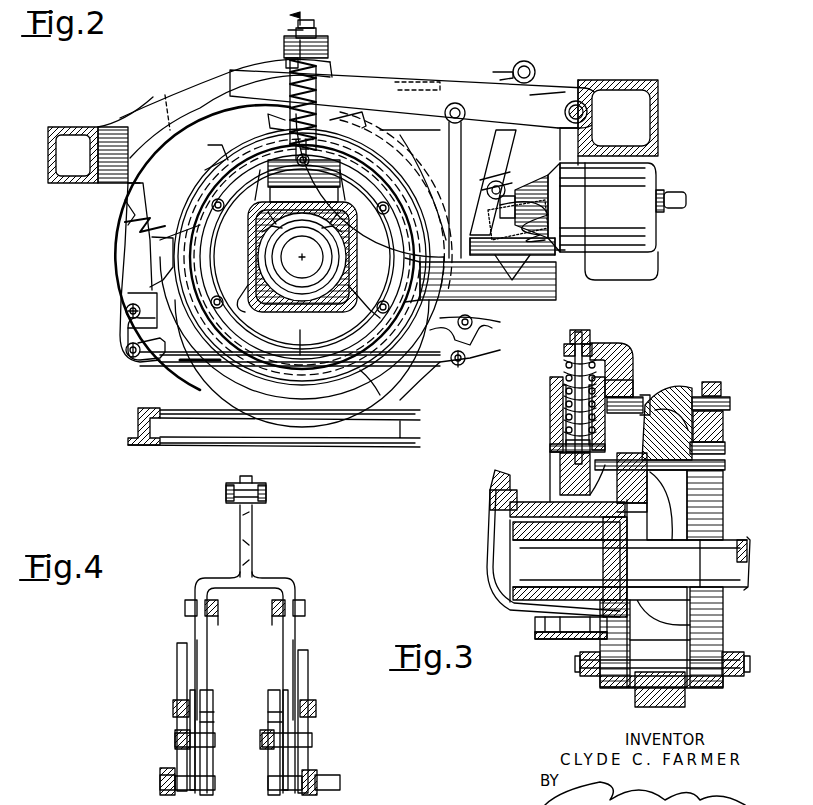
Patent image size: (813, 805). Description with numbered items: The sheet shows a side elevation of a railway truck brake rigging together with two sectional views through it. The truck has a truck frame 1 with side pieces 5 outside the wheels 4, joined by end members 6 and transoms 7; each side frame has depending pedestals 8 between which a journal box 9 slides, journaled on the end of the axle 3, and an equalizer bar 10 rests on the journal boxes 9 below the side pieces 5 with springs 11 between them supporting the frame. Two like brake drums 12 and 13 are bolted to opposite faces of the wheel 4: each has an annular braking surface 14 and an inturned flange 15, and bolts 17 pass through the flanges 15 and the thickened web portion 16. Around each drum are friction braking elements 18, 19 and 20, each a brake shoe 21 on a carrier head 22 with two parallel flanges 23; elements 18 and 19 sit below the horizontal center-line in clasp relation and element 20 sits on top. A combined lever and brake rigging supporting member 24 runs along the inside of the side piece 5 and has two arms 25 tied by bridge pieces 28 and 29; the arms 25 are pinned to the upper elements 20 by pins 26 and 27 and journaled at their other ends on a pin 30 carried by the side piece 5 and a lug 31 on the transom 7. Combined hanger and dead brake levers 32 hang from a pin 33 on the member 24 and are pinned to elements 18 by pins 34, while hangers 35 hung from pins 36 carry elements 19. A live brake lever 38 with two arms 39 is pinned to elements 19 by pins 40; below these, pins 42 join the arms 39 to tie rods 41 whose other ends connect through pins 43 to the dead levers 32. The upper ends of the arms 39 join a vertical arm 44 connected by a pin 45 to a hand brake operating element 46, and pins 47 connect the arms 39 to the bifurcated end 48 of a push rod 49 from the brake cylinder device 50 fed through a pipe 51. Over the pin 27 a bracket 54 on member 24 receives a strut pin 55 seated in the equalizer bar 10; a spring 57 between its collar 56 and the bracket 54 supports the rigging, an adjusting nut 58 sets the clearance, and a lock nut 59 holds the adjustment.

In FIG. 2, the truck frame 1 is at (640, 80).
In FIG. 2, the axle 3 is at (262, 246).
In FIG. 3, the axle 3 is at (748, 540).
In FIG. 2, the wheels 4 is at (185, 378).
In FIG. 3, the wheels 4 is at (672, 395).
In FIG. 2, the side pieces 5 is at (198, 85).
In FIG. 3, the side pieces 5 is at (550, 400).
In FIG. 2, the end members 6 is at (48, 150).
In FIG. 2, the transoms 7 is at (656, 260).
In FIG. 3, the pedestals 8 is at (540, 640).
In FIG. 2, the journal box 9 is at (275, 312).
In FIG. 3, the journal box 9 is at (500, 607).
In FIG. 2, the equalizer bar 10 is at (556, 293).
In FIG. 3, the equalizer bar 10 is at (560, 472).
In FIG. 2, the springs 11 is at (570, 263).
In FIG. 3, the brake drum 12 is at (728, 446).
In FIG. 2, the brake drum 13 is at (205, 190).
In FIG. 3, the brake drum 13 is at (625, 535).
In FIG. 2, the annular braking surface 14 is at (268, 380).
In FIG. 3, the annular braking surface 14 is at (724, 430).
In FIG. 2, the annular inturned flange 15 is at (210, 230).
In FIG. 3, the annular inturned flange 15 is at (725, 466).
In FIG. 2, the web portion 16 is at (340, 375).
In FIG. 3, the web portion 16 is at (680, 612).
In FIG. 2, the bolts 17 is at (380, 300).
In FIG. 3, the bolts 17 is at (700, 660).
In FIG. 2, the friction braking element 18 is at (290, 253).
In FIG. 2, the friction braking element 19 is at (395, 340).
In FIG. 2, the friction braking element 20 is at (240, 150).
In FIG. 3, the friction braking element 20 is at (642, 402).
In FIG. 2, the brake shoe 21 is at (160, 237).
In FIG. 3, the brake shoe 21 is at (632, 507).
In FIG. 2, the carrier head 22 is at (160, 258).
In FIG. 2, the flanges 23 is at (125, 302).
In FIG. 3, the flanges 23 is at (633, 370).
In FIG. 2, the combined lever and brake rigging supporting member 24 is at (135, 135).
In FIG. 3, the combined lever and brake rigging supporting member 24 is at (570, 530).
In FIG. 3, the side pieces or arms 25 is at (721, 385).
In FIG. 3, the pin 26 is at (730, 404).
In FIG. 2, the pin 27 is at (292, 100).
In FIG. 3, the pin 27 is at (640, 397).
In FIG. 2, the bridge piece 28 is at (168, 100).
In FIG. 2, the bridge piece 29 is at (423, 78).
In FIG. 2, the pin 30 is at (588, 112).
In FIG. 2, the lug 31 is at (600, 80).
In FIG. 2, the combined hanger and dead brake lever 32 is at (124, 216).
In FIG. 2, the pin 33 is at (120, 187).
In FIG. 2, the pin 34 is at (125, 311).
In FIG. 2, the hanger 35 is at (448, 162).
In FIG. 4, the hanger 35 is at (177, 670).
In FIG. 2, the pin 36 is at (445, 110).
In FIG. 2, the live brake lever 38 is at (500, 163).
In FIG. 4, the live brake lever 38 is at (290, 582).
In FIG. 2, the arms 39 is at (478, 340).
In FIG. 4, the arms 39 is at (195, 660).
In FIG. 2, the pin 40 is at (473, 322).
In FIG. 4, the pin 40 is at (262, 740).
In FIG. 2, the tie rod 41 is at (404, 392).
In FIG. 4, the tie rod 41 is at (168, 768).
In FIG. 3, the tie rod 41 is at (582, 676).
In FIG. 2, the pin 42 is at (456, 368).
In FIG. 4, the pin 42 is at (160, 782).
In FIG. 3, the pin 42 is at (580, 662).
In FIG. 2, the pin 43 is at (126, 350).
In FIG. 2, the arm 44 is at (565, 88).
In FIG. 4, the arm 44 is at (252, 540).
In FIG. 2, the pin 45 is at (520, 62).
In FIG. 4, the pin 45 is at (266, 492).
In FIG. 2, the operating element 46 is at (495, 72).
In FIG. 4, the operating element 46 is at (244, 483).
In FIG. 2, the pins 47 is at (488, 190).
In FIG. 4, the pins 47 is at (185, 607).
In FIG. 2, the bifurcated end 48 is at (520, 150).
In FIG. 4, the bifurcated end 48 is at (272, 622).
In FIG. 2, the push rod 49 is at (528, 190).
In FIG. 2, the brake cylinder device 50 is at (612, 250).
In FIG. 2, the pipe 51 is at (675, 195).
In FIG. 2, the bracket 54 is at (328, 45).
In FIG. 3, the bracket 54 is at (612, 345).
In FIG. 2, the strut pin 55 is at (292, 30).
In FIG. 3, the strut pin 55 is at (576, 420).
In FIG. 2, the annular collar 56 is at (222, 165).
In FIG. 3, the annular collar 56 is at (550, 445).
In FIG. 2, the spring 57 is at (286, 62).
In FIG. 3, the spring 57 is at (566, 366).
In FIG. 2, the adjusting nut 58 is at (320, 40).
In FIG. 3, the adjusting nut 58 is at (564, 348).
In FIG. 3, the lock nut 59 is at (572, 332).